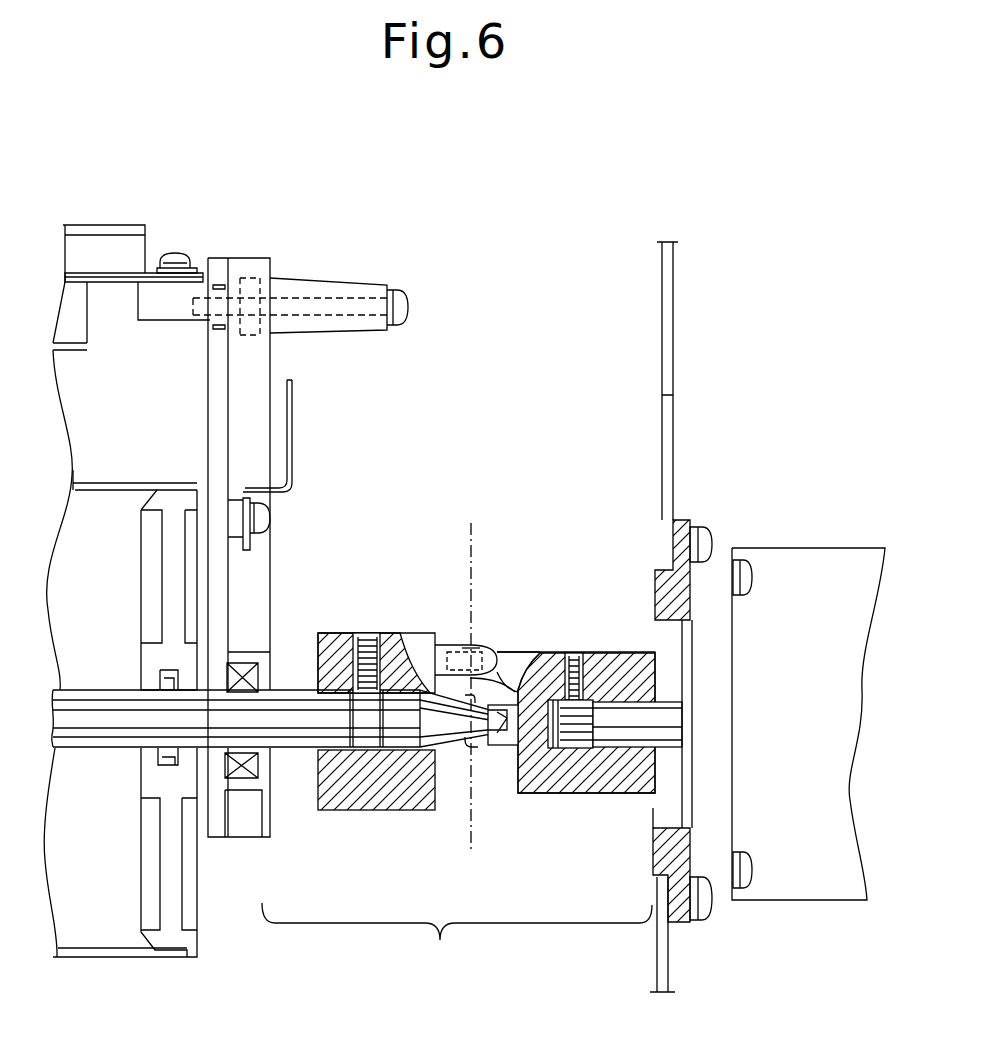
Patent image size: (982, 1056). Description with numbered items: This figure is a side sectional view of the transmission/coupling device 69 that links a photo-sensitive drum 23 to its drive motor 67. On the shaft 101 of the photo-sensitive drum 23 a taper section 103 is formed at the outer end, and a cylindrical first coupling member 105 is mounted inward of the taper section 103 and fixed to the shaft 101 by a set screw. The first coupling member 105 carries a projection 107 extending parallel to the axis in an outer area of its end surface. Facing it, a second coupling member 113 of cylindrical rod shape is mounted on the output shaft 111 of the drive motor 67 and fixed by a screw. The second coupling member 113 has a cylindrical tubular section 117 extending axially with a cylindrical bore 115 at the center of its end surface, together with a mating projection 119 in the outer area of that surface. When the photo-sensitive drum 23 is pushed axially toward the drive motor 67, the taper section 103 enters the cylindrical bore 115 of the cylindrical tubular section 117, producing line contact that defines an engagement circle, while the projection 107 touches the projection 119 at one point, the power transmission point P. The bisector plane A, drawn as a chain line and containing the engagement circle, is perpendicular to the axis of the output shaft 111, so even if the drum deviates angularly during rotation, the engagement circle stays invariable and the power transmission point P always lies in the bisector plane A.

The photo-sensitive drum 23 is at (110, 958).
The drive motor 67 is at (783, 878).
The transmission/coupling device 69 is at (457, 940).
The shaft 101 is at (291, 752).
The taper section 103 is at (440, 752).
The first coupling member 105 is at (377, 810).
The projection (engagement section) 107 is at (447, 645).
The output shaft 111 is at (628, 735).
The second coupling member 113 is at (567, 795).
The cylindrical bore 115 is at (501, 755).
The cylindrical tubular section 117 is at (483, 757).
The projection (mating engagement section) 119 is at (512, 652).
The power transmission point P is at (465, 648).
The bisector plane A is at (472, 540).